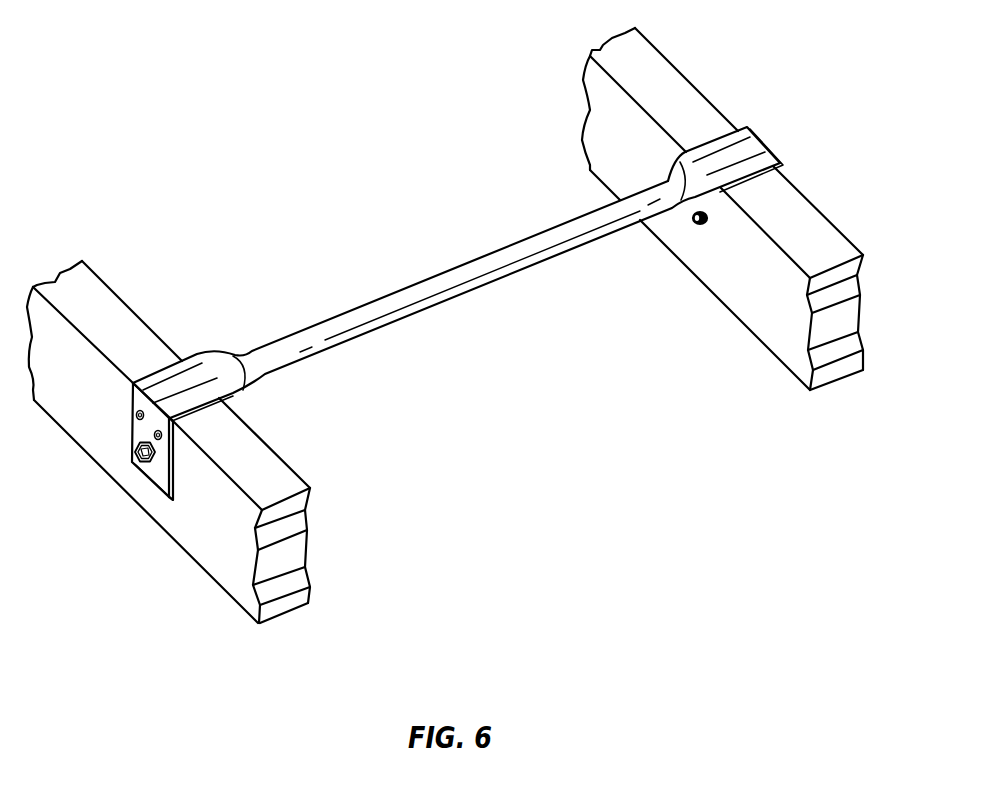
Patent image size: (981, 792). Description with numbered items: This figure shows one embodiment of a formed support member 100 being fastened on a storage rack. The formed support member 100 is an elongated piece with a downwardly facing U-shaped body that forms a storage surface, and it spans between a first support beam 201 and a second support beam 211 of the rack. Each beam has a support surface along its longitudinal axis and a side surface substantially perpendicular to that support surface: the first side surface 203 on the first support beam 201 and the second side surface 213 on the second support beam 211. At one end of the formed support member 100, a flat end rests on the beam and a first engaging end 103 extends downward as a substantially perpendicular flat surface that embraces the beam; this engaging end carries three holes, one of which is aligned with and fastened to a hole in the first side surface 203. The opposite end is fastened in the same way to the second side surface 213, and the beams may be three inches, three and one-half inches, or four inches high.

The formed support member 100 is at (403, 252).
The first engaging end 103 is at (145, 432).
The first support beam 201 is at (280, 583).
The first side surface 203 is at (202, 538).
The second support beam 211 is at (833, 345).
The second side surface 213 is at (752, 295).